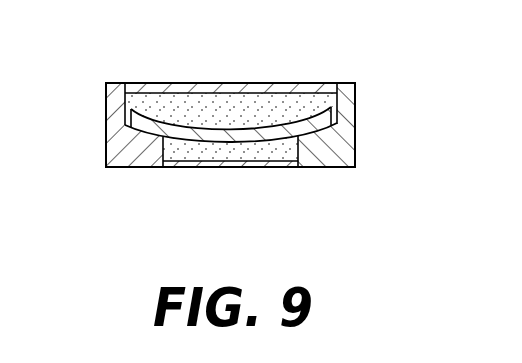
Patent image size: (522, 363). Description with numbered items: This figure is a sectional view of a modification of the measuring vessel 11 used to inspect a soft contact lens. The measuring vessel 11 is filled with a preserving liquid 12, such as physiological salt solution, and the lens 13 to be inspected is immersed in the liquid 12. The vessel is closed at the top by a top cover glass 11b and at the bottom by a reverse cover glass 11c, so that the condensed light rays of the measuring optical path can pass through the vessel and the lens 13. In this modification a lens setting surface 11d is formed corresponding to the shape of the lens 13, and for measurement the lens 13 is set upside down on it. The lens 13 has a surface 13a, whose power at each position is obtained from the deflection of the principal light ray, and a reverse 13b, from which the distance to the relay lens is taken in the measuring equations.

The measuring vessel 11 is at (349, 61).
The top cover glass 11b is at (187, 88).
The reverse cover glass 11c is at (265, 163).
The lens setting surface 11d is at (302, 133).
The preserving liquid 12 is at (243, 100).
The lens to be inspected 13 is at (245, 138).
The surface of the lens 13a is at (187, 146).
The reverse of the lens 13b is at (243, 139).